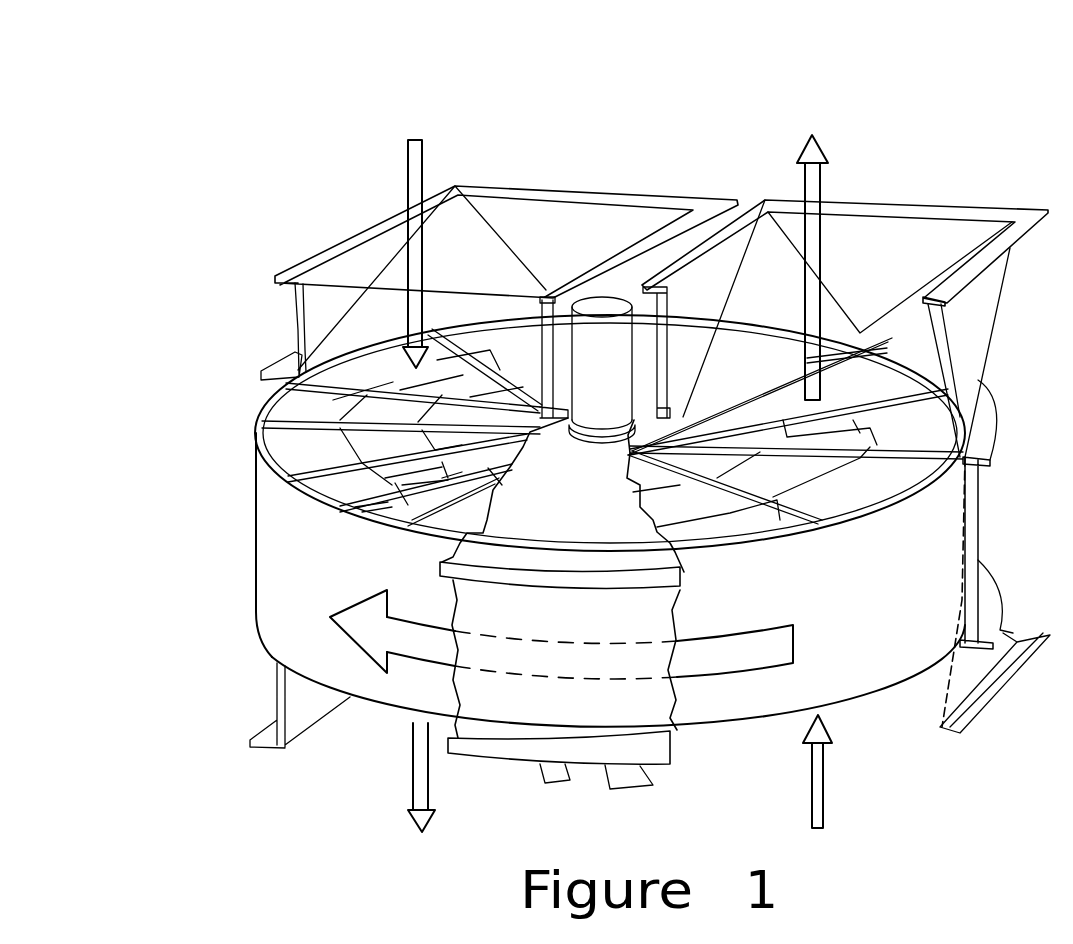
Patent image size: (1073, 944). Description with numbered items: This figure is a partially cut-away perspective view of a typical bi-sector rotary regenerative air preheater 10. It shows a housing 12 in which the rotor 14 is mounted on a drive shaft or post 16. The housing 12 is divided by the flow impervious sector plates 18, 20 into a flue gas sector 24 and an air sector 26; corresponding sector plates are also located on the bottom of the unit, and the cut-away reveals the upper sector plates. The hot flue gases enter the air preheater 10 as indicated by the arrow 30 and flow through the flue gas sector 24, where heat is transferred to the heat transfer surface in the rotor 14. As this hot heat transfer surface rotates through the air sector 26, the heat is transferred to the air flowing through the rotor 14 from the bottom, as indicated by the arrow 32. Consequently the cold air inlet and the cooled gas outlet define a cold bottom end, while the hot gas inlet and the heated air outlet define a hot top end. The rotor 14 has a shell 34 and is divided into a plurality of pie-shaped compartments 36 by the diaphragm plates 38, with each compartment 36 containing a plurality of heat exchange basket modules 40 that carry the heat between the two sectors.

The bi-sector air preheater 10 is at (898, 113).
The housing 12 is at (980, 500).
The rotor 14 is at (718, 695).
The drive shaft or post 16 is at (615, 355).
The sector plate 18 is at (584, 522).
The sector plate 20 is at (650, 408).
The flue gas sector 24 is at (538, 220).
The air sector 26 is at (907, 240).
The arrow 30 is at (408, 167).
The arrow 32 is at (823, 783).
The shell 34 is at (871, 678).
The pie-shaped compartments 36 is at (317, 460).
The diaphragm plates 38 is at (777, 540).
The heat exchange basket modules 40 is at (335, 509).